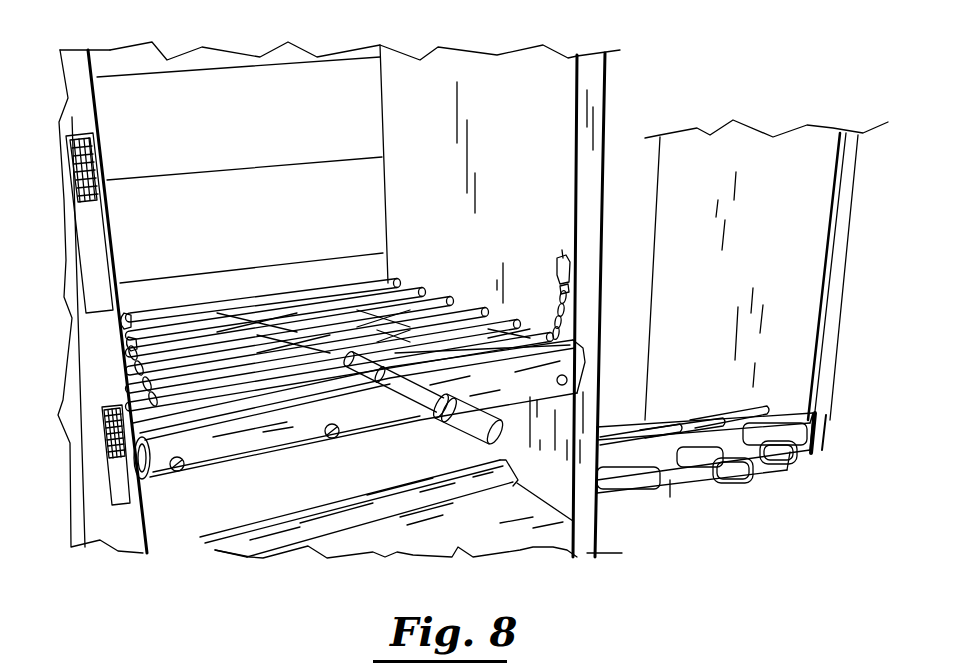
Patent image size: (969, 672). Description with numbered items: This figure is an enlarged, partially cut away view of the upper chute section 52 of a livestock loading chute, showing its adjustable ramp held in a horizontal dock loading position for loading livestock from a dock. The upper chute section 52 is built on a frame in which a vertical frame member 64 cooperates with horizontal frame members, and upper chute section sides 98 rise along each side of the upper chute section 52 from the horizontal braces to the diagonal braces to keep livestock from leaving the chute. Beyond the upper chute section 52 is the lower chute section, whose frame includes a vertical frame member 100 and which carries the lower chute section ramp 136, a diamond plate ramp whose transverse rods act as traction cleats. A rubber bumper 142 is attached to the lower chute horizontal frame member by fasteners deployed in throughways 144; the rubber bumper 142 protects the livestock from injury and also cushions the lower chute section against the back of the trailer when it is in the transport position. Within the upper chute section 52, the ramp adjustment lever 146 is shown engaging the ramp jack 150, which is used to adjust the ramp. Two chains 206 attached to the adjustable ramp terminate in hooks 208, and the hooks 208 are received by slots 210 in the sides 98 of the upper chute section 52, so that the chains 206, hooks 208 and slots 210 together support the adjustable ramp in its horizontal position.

The upper chute section 52 is at (492, 36).
The vertical frame member 64 is at (610, 118).
The upper chute section sides 98 is at (531, 146).
The vertical frame member 100 is at (840, 340).
The lower chute section ramp 136 is at (416, 271).
The rubber bumper 142 is at (250, 462).
The throughways 144 is at (332, 438).
The ramp adjustment lever 146 is at (414, 426).
The ramp jack 150 is at (353, 353).
The chains 206 is at (122, 373).
The hooks 208 is at (122, 327).
The slots 210 is at (567, 252).